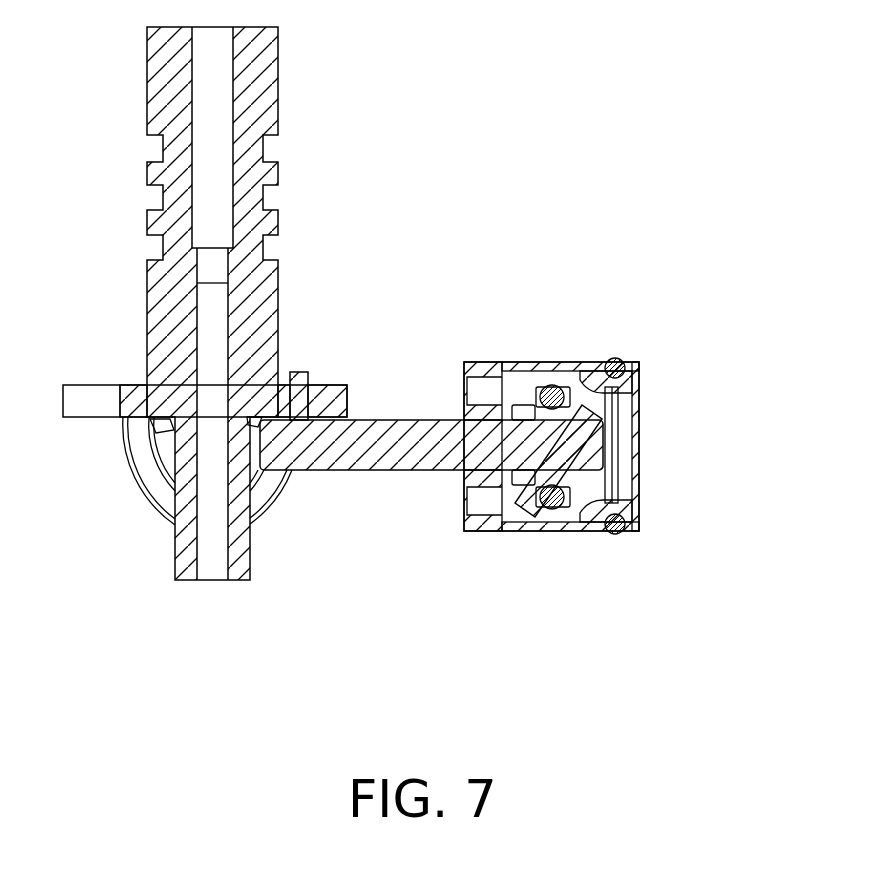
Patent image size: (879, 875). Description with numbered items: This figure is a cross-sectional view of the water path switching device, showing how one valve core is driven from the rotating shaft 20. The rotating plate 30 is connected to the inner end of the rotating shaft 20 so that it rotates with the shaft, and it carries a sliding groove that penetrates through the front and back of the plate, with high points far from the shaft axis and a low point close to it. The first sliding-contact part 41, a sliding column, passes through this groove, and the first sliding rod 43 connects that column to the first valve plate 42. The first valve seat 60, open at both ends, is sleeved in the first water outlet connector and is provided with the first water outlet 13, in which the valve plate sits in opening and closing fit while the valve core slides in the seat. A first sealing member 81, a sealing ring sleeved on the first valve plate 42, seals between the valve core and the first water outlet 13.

The rotating shaft 20 is at (173, 220).
The rotating plate 30 is at (130, 386).
The first sliding-contact part 41 is at (300, 372).
The first valve plate 42 is at (586, 406).
The first sliding rod 43 is at (360, 452).
The first valve seat 60 is at (487, 531).
The first sealing member 81 is at (551, 385).
The first water outlet 13 is at (618, 508).